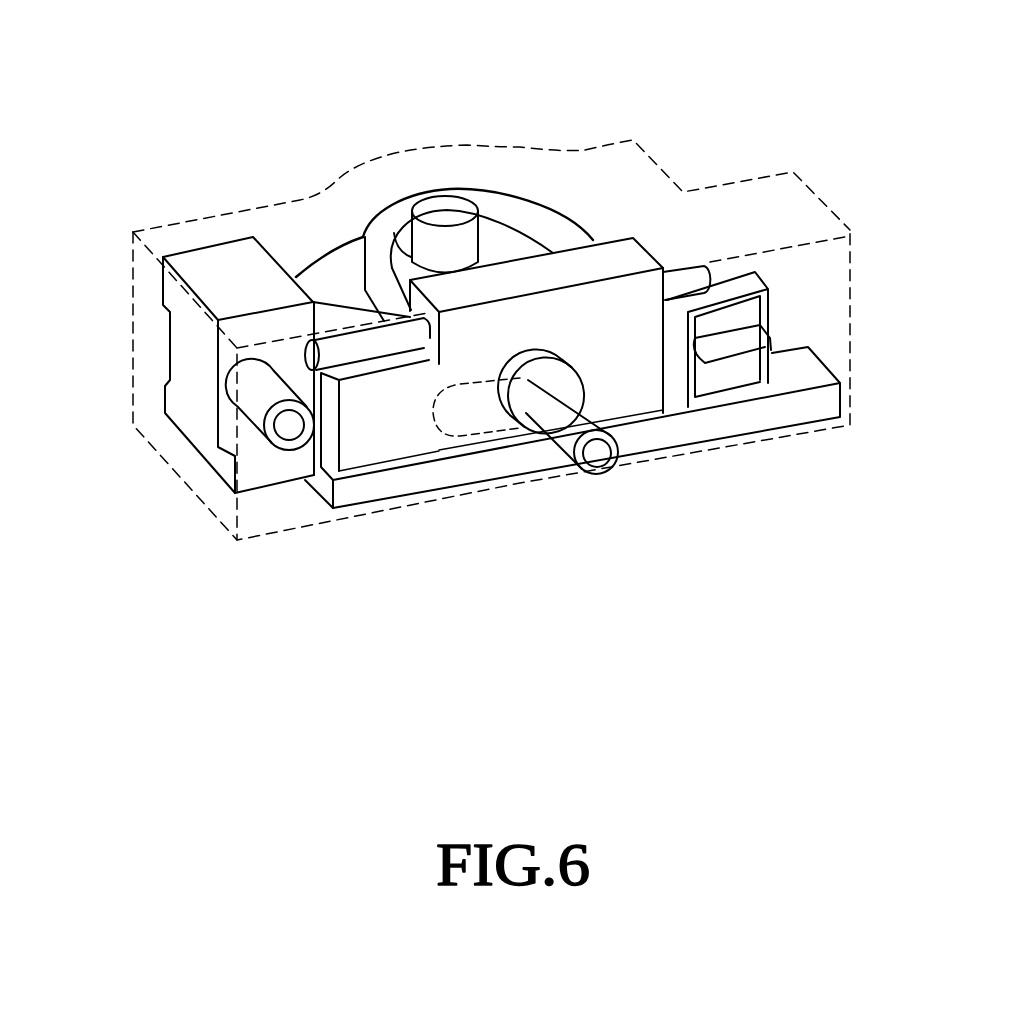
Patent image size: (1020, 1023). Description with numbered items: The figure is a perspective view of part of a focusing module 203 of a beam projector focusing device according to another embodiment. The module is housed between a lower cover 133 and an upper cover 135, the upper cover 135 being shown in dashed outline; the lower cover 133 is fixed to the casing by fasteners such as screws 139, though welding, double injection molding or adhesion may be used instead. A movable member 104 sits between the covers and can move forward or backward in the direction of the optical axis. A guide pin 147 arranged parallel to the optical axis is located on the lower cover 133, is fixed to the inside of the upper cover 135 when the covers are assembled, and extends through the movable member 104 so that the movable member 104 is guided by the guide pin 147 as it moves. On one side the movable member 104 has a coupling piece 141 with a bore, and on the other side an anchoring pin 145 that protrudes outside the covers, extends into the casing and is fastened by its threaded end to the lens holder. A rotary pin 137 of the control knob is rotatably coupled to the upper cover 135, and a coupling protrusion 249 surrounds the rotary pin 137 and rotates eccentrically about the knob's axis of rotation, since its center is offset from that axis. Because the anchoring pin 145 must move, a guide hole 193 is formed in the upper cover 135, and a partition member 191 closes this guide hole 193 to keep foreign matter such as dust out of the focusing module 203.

The focusing module 203 is at (249, 61).
The upper cover 135 is at (737, 183).
The lower cover 133 is at (162, 292).
The screw 139 is at (287, 433).
The partition member 191 is at (362, 440).
The guide hole 193 is at (472, 430).
The movable member 104 is at (627, 400).
The coupling piece 141 is at (557, 227).
The coupling protrusion 249 is at (510, 238).
The rotary pin 137 is at (445, 208).
The anchoring pin 145 is at (598, 452).
The guide pin 147 is at (695, 278).